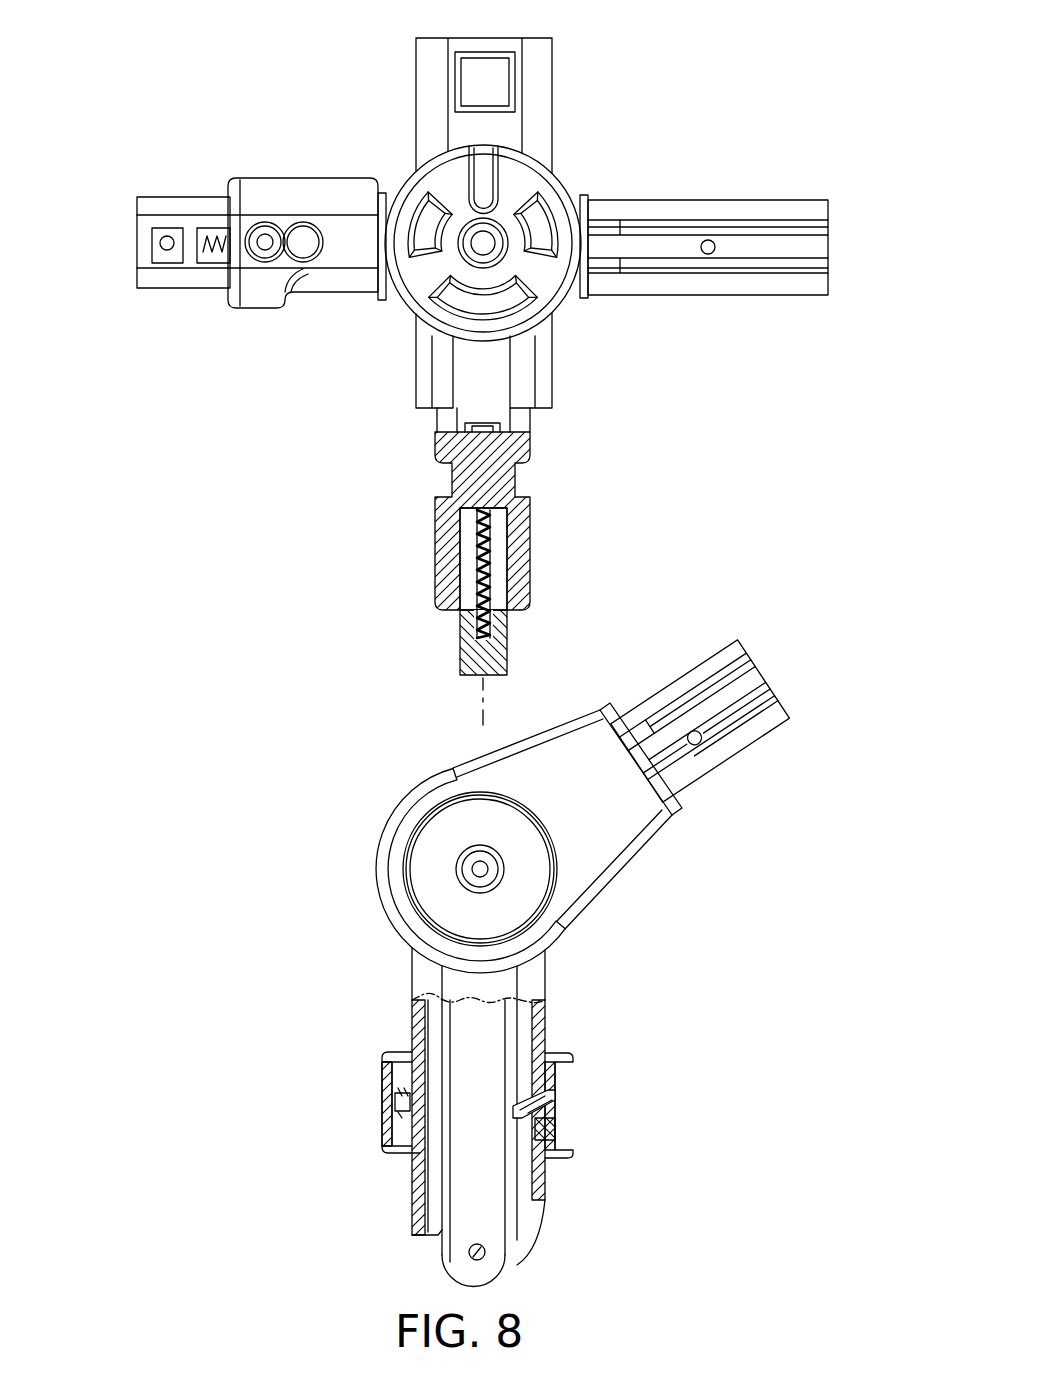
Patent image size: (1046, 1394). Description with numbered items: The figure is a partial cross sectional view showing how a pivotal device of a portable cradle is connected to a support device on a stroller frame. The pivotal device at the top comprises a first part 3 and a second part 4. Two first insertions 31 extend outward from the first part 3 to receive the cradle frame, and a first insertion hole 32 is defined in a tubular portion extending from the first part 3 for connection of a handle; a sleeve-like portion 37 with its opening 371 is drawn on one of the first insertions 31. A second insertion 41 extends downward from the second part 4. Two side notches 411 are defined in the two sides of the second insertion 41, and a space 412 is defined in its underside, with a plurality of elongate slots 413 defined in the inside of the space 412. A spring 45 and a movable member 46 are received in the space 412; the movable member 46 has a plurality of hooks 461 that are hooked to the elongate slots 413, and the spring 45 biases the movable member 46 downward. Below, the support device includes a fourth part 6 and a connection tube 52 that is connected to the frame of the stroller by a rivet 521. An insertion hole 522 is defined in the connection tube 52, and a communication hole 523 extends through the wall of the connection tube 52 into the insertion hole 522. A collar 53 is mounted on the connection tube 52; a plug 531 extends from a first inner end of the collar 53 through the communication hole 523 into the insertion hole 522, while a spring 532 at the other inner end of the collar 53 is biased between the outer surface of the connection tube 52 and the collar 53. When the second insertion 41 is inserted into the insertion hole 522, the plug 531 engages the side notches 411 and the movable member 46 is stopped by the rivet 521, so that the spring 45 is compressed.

The first part 3 is at (449, 210).
The second part 4 is at (405, 175).
The fourth part 6 is at (618, 845).
The first insertion 31 is at (170, 205).
The first insertion hole 32 is at (537, 80).
The sleeve 37 is at (282, 184).
The second insertion 41 is at (522, 372).
The spring 45 is at (488, 582).
The movable member 46 is at (467, 643).
The connection tube 52 is at (415, 1181).
The collar 53 is at (475, 1106).
The pivot hole 371 is at (259, 232).
The side notch 411 is at (452, 490).
The space 412 is at (576, 553).
The elongate slot 413 is at (497, 536).
The hook 461 is at (497, 592).
The rivet 521 is at (468, 1252).
The insertion hole 522 is at (406, 1126).
The communication hole 523 is at (545, 1125).
The plug 531 is at (540, 1107).
The spring 532 is at (393, 1114).